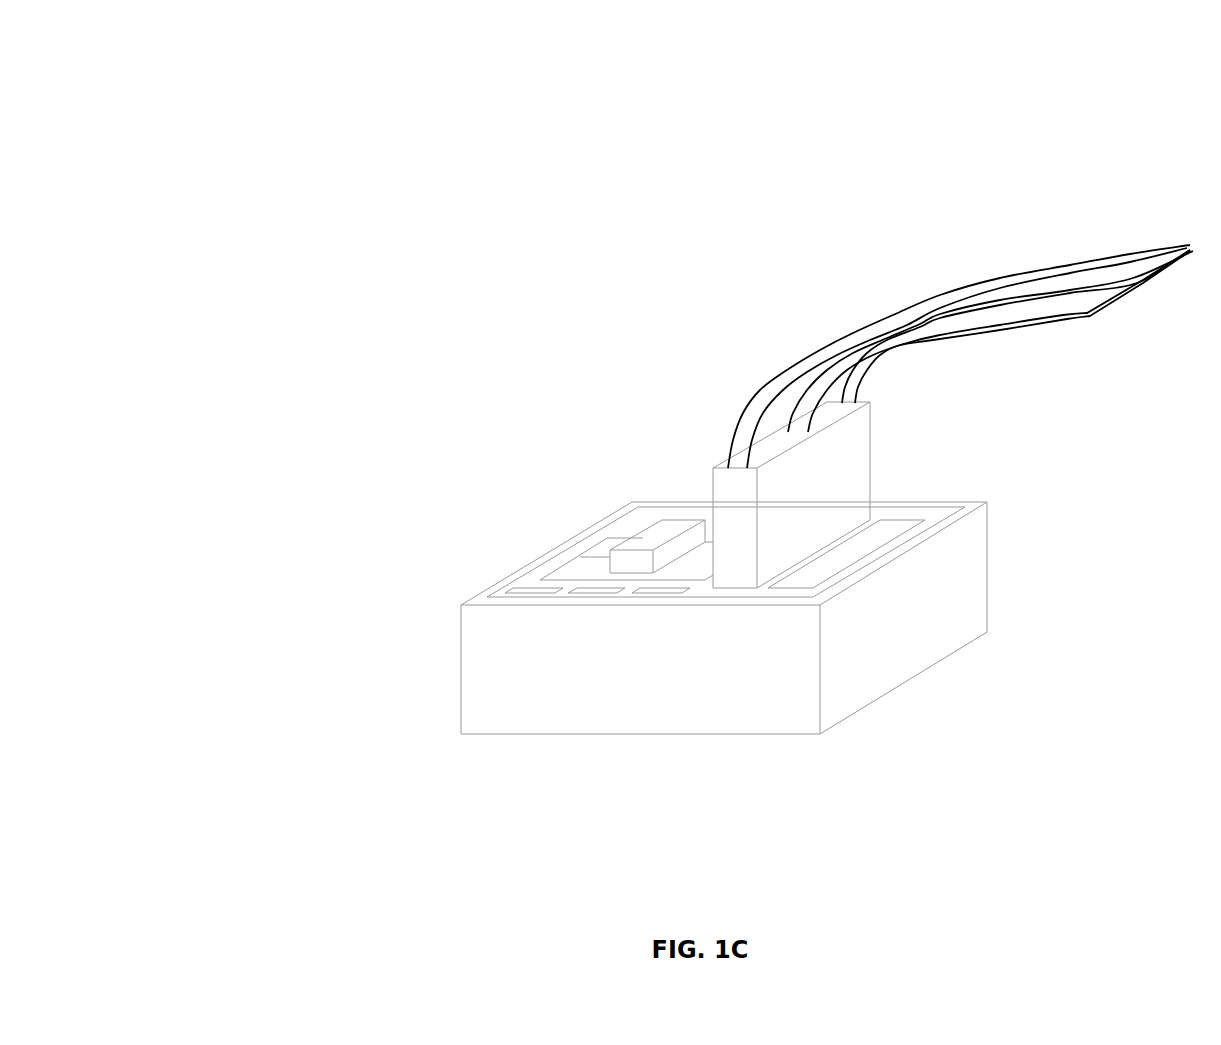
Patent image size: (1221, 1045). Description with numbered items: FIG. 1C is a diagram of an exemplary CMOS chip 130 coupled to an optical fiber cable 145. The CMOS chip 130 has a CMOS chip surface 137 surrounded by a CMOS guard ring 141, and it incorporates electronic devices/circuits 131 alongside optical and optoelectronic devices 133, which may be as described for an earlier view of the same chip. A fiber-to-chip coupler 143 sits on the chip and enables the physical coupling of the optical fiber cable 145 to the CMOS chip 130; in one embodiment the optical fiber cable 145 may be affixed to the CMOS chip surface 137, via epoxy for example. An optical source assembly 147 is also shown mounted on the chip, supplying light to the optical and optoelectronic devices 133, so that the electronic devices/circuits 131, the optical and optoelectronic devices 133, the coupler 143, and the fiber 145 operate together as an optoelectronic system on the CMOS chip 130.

The CMOS chip 130 is at (327, 197).
The electronic devices/circuits 131 is at (664, 598).
The optical and optoelectronic devices 133 is at (582, 567).
The CMOS chip surface 137 is at (602, 552).
The CMOS guard ring 141 is at (957, 563).
The fiber-to-chip coupler 143 is at (855, 433).
The optical fiber cable 145 is at (920, 305).
The optical source assembly 147 is at (667, 538).